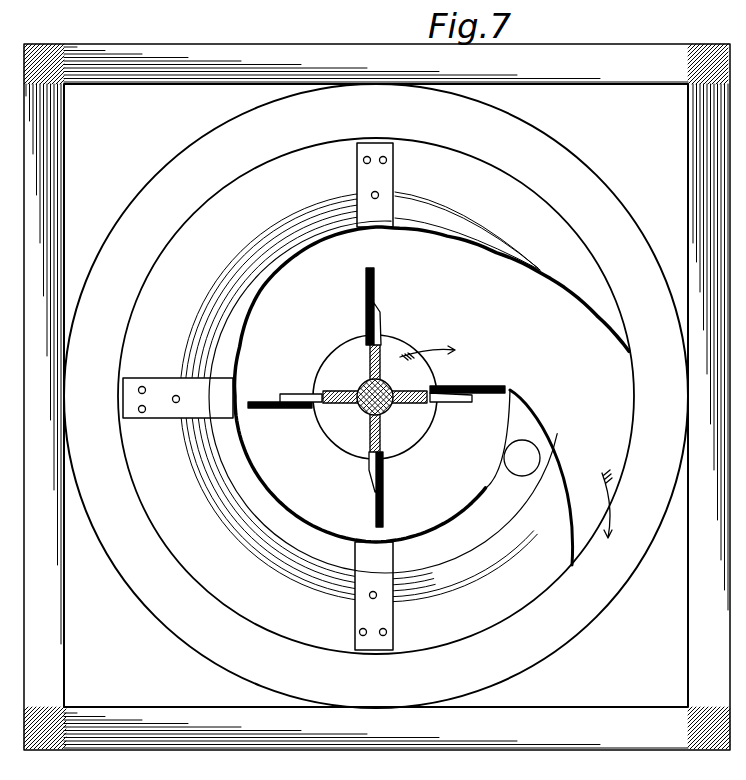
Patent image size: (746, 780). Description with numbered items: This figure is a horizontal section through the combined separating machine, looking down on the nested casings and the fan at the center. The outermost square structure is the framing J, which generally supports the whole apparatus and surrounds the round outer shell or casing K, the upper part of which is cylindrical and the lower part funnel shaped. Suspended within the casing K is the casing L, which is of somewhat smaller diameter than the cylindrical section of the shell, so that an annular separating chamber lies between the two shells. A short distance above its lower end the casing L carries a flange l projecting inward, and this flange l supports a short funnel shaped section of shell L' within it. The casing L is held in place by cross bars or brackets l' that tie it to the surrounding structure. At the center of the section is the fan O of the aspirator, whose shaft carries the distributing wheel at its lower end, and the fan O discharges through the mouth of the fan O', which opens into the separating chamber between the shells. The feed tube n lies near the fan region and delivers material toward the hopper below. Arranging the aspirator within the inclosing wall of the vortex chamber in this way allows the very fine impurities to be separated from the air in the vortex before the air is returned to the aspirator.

The framing J is at (688, 707).
The outer shell or casing K is at (376, 396).
The flange l is at (349, 392).
The cross bars or brackets l' is at (258, 396).
The casing L is at (432, 410).
The funnel shaped section of a shell L' is at (383, 397).
The feed tube n is at (522, 458).
The fan O is at (386, 397).
The mouth of the fan O' is at (418, 397).